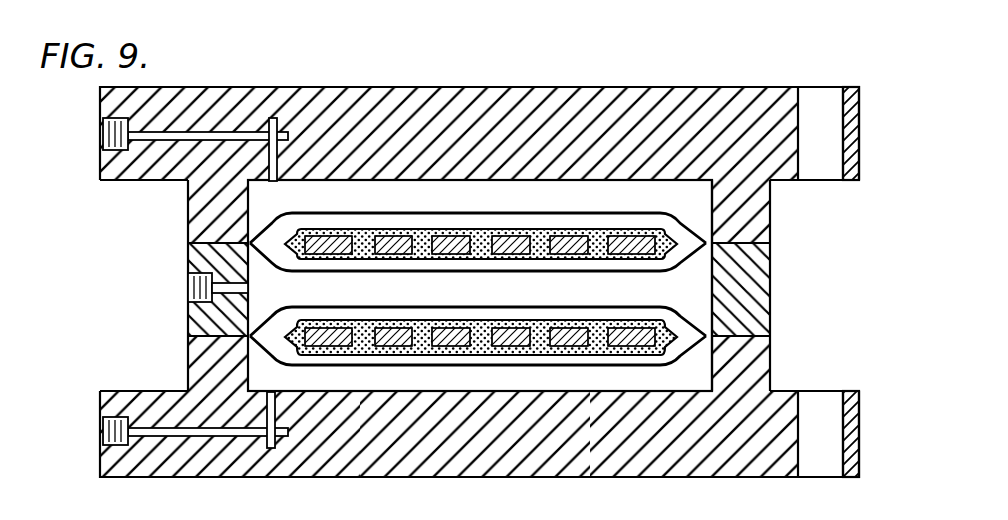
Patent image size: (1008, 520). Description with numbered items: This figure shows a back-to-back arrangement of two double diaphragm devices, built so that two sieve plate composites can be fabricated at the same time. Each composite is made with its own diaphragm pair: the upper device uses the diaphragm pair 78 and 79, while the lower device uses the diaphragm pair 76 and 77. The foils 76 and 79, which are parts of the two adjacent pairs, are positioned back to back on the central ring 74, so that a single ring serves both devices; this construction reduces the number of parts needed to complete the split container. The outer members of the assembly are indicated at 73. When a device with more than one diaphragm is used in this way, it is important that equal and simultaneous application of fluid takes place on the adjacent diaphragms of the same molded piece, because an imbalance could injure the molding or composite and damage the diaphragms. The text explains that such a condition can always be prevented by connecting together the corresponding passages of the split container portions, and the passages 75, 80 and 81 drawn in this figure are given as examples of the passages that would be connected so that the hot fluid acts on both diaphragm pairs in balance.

The end plate 73 is at (862, 133).
The ring 74 is at (773, 287).
The passage 75 is at (188, 287).
The foil 76 is at (690, 317).
The diaphragm 77 is at (693, 352).
The diaphragm 78 is at (690, 222).
The foil 79 is at (693, 258).
The passage 80 is at (103, 134).
The passage 81 is at (103, 431).